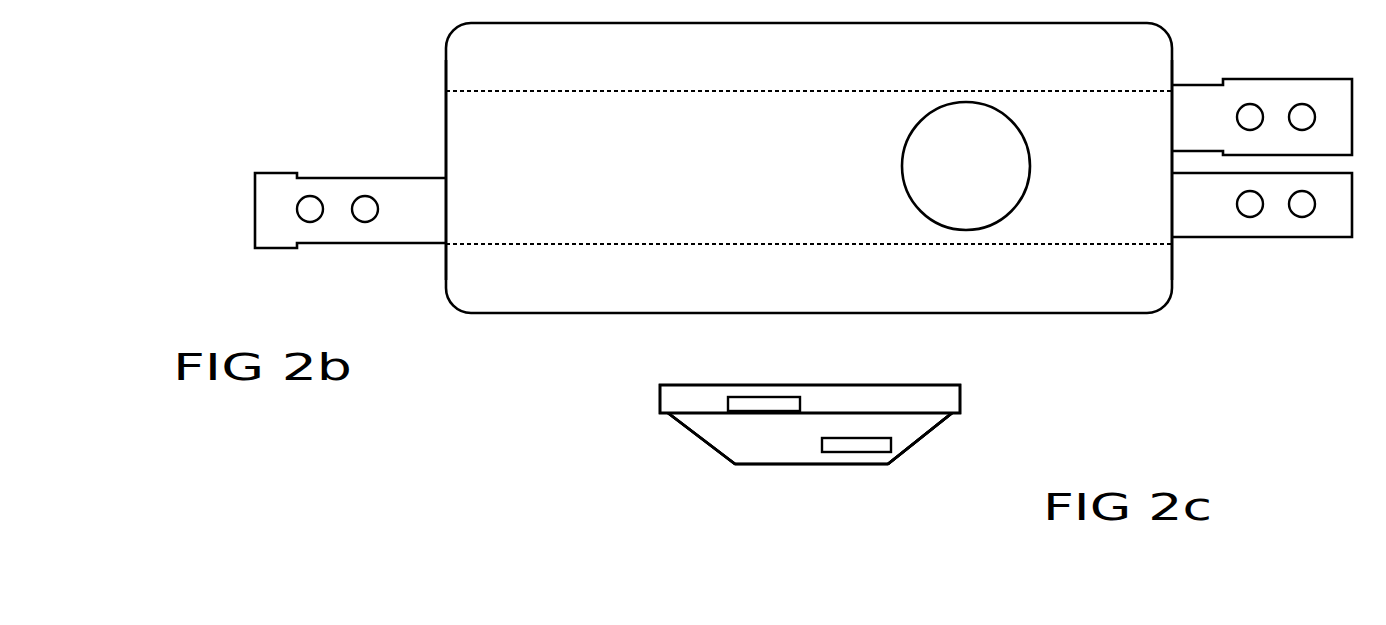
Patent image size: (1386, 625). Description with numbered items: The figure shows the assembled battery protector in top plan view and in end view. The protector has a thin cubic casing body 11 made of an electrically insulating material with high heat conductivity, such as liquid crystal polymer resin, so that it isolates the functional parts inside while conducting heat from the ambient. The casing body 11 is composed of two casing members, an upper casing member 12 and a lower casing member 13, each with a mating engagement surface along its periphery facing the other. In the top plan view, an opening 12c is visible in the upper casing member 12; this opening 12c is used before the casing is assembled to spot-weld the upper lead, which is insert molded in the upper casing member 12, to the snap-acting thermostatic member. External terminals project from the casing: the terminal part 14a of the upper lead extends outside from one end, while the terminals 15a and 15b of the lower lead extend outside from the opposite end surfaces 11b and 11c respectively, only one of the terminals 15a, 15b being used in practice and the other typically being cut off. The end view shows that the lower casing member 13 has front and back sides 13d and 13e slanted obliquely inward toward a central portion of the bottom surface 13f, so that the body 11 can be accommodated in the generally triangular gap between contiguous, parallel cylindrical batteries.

In FIG. 2B, the casing body 11 is at (492, 42).
In FIG. 2C, the casing body 11 is at (960, 384).
In FIG. 2B, the end surface 11b is at (1172, 43).
In FIG. 2C, the end surface 11b is at (908, 425).
In FIG. 2B, the end surface 11c is at (446, 127).
In FIG. 2C, the upper casing member 12 is at (660, 398).
In FIG. 2B, the opening 12c is at (1027, 150).
In FIG. 2C, the lower casing member 13 is at (707, 430).
In FIG. 2C, the front side 13d is at (715, 452).
In FIG. 2C, the back side 13e is at (907, 448).
In FIG. 2C, the bottom surface 13f is at (868, 467).
In FIG. 2B, the terminal part 14a is at (1283, 222).
In FIG. 2C, the terminal part 14a is at (767, 403).
In FIG. 2B, the terminal 15a is at (1298, 92).
In FIG. 2C, the terminal 15a is at (850, 447).
In FIG. 2B, the terminal 15b is at (338, 230).